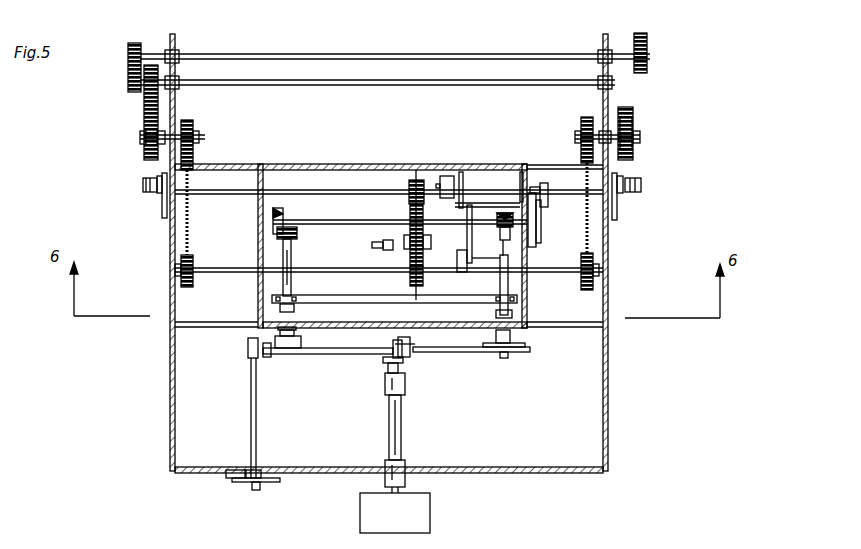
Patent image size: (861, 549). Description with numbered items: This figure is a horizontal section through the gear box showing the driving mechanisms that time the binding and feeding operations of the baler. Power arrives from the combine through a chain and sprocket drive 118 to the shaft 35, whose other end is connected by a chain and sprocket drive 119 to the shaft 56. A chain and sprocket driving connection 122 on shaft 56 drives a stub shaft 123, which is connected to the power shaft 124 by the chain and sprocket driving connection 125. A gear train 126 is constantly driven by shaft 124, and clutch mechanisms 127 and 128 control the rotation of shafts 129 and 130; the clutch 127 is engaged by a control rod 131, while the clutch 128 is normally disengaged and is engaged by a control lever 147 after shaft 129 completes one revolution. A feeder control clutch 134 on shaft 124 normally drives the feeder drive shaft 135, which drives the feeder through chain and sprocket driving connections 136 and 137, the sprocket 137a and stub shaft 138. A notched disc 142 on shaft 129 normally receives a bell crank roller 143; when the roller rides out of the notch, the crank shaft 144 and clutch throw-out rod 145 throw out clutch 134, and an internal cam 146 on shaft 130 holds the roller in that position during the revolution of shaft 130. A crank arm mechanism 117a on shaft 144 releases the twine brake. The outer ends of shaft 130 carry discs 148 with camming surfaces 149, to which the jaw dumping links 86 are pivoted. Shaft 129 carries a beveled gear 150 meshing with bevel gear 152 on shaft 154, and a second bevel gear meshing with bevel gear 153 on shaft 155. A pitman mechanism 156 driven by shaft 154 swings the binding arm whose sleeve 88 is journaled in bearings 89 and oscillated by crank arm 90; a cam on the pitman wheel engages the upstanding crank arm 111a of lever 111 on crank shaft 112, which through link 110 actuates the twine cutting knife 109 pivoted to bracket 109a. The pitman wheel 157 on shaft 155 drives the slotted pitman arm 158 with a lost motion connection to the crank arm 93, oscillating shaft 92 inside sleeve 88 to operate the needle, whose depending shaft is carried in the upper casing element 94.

The shaft 35 is at (396, 57).
The shaft 56 is at (365, 83).
The jaw dumping links 86 is at (143, 185).
The sleeve 88 is at (389, 426).
The bearings 89 is at (405, 383).
The crank arm 90 is at (387, 364).
The shaft 92 is at (393, 347).
The crank arm 93 is at (410, 348).
The upper casing element 94 is at (420, 514).
The twine cutting knife 109 is at (262, 477).
The bracket 109a is at (236, 478).
The link 110 is at (248, 483).
The lever 111 is at (256, 486).
The upstanding crank arm 111a is at (256, 358).
The crank shaft 112 is at (257, 426).
The crank arm mechanism 117a is at (536, 216).
The chain and sprocket drive 118 is at (648, 38).
The chain and sprocket drive 119 is at (128, 74).
The chain and sprocket driving connection 122 is at (144, 112).
The stub shaft 123 is at (140, 138).
The power shaft 124 is at (242, 280).
The chain and sprocket driving connection 125 is at (193, 161).
The gear train 126 is at (426, 232).
The clutch mechanism 127 is at (388, 240).
The clutch mechanism 128 is at (430, 152).
The shaft 129 is at (389, 252).
The shaft 130 is at (338, 189).
The control rod 131 is at (400, 207).
The feeder control clutch 134 is at (455, 278).
The feeder drive shaft 135 is at (572, 276).
The chain and sprocket driving connection 136 is at (593, 230).
The chain and sprocket driving connection 137 is at (628, 108).
The sprocket 137a is at (633, 128).
The stub shaft 138 is at (640, 139).
The notched disc 142 is at (541, 238).
The bell crank roller 143 is at (530, 168).
The crank shaft 144 is at (478, 170).
The clutch throw-out rod 145 is at (467, 258).
The internal cam 146 is at (548, 190).
The control lever 147 is at (445, 212).
The discs 148 is at (162, 205).
The camming surface 149 is at (157, 178).
The beveled gear 150 is at (278, 212).
The bevel gear 152 is at (297, 234).
The bevel gear 153 is at (495, 234).
The shaft 154 is at (291, 287).
The shaft 155 is at (500, 314).
The pitman mechanism 156 is at (332, 364).
The pitman wheel 157 is at (524, 345).
The pitman arm 158 is at (456, 352).